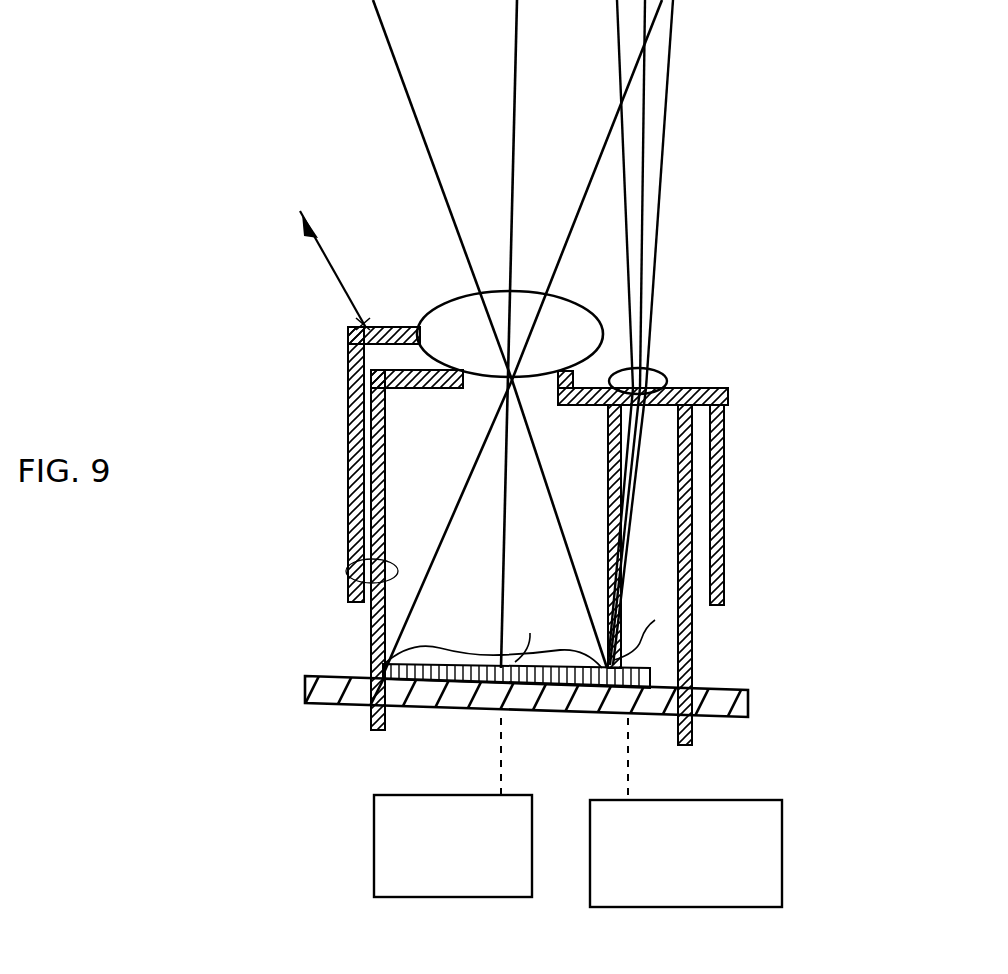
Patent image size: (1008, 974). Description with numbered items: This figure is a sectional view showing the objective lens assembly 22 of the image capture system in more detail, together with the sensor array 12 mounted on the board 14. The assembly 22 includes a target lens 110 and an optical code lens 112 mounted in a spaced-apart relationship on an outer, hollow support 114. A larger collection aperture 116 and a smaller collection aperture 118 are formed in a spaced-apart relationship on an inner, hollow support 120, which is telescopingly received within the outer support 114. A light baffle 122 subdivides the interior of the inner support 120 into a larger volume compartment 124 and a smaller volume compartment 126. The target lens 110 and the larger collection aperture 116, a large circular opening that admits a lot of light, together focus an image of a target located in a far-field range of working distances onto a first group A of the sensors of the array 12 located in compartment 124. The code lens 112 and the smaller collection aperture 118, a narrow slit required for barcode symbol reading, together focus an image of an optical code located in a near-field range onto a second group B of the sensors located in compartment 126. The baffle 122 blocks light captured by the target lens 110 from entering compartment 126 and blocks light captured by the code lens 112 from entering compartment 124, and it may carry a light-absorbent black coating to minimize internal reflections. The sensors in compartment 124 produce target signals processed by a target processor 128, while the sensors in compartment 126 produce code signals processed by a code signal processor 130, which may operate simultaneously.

The objective lens assembly 22 is at (303, 256).
The target lens 110 is at (612, 288).
The larger collection aperture 116 is at (593, 337).
The optical code lens 112 is at (711, 332).
The smaller collection aperture 118 is at (694, 384).
The outer hollow support 114 is at (347, 468).
The inner hollow support 120 is at (371, 652).
The light baffle 122 is at (724, 536).
The smaller volume compartment 126 is at (700, 560).
The larger volume compartment 124 is at (360, 583).
The sensor array 12 is at (591, 639).
The board 14 is at (745, 702).
The target processor 128 is at (374, 842).
The code signal processor 130 is at (782, 840).
The first group of sensors A is at (523, 636).
The second group of sensors B is at (641, 629).